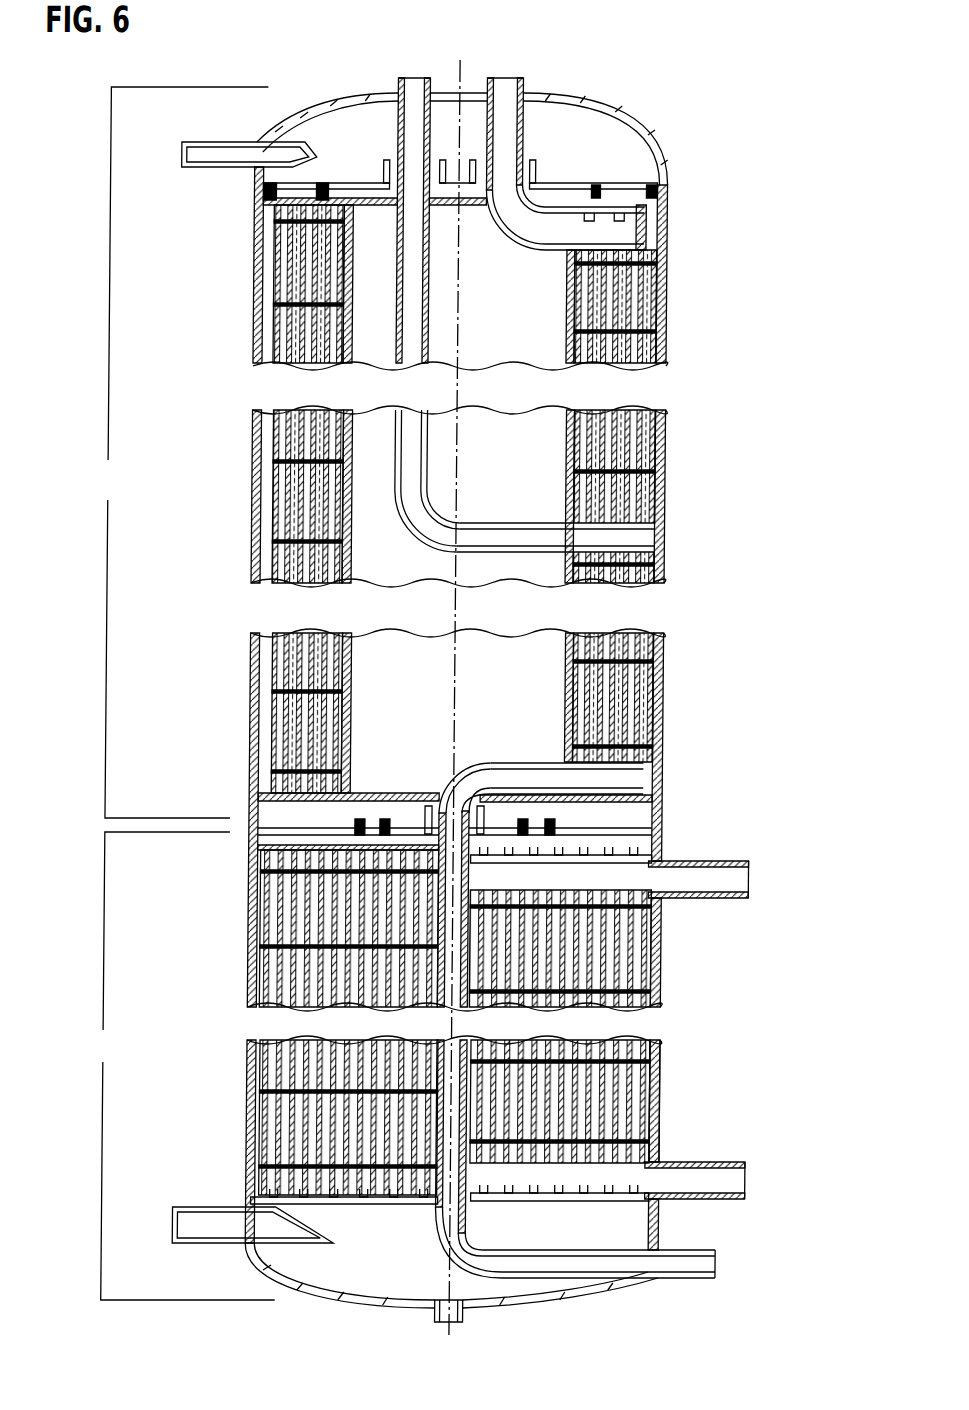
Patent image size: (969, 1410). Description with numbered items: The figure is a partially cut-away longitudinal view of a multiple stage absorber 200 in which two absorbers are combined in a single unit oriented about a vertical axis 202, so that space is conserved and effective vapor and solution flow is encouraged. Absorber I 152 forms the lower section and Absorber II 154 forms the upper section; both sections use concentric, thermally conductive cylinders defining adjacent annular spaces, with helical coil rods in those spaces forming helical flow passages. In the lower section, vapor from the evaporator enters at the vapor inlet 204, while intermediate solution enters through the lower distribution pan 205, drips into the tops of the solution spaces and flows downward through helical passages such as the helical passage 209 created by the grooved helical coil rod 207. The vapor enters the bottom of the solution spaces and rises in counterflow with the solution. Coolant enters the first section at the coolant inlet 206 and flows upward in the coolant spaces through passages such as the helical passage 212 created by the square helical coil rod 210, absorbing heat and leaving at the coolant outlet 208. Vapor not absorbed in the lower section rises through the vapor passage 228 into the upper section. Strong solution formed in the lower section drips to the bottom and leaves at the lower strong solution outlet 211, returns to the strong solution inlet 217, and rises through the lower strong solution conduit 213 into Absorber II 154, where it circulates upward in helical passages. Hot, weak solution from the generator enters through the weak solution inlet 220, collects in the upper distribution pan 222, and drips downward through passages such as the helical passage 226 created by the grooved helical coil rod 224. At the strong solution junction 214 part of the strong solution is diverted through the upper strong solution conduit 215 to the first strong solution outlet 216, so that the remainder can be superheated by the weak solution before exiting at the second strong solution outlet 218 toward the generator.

The multiple stage absorber 200 is at (76, 302).
The vertical axis 202 is at (458, 78).
The vapor inlet 204 is at (209, 1207).
The lower distribution pan 205 is at (633, 830).
The coolant inlet 206 is at (679, 1163).
The grooved helical coil rod 207 is at (265, 1093).
The upper right outlet pipe 208 is at (692, 898).
The helical passage 209 is at (273, 1133).
The square helical coil rod 210 is at (658, 1061).
The lower strong solution outlet 211 is at (469, 1320).
The helical passage 212 is at (656, 1088).
The lower strong solution conduit 213 is at (457, 998).
The strong solution junction 214 is at (610, 541).
The upper strong solution conduit 215 is at (411, 330).
The first strong solution outlet 216 is at (393, 78).
The strong solution inlet 217 is at (695, 1278).
The second strong solution outlet 218 is at (518, 82).
The weak solution inlet 220 is at (200, 142).
The upper distribution pan 222 is at (654, 187).
The grooved helical coil rod 224 is at (286, 303).
The helical passage 226 is at (252, 257).
The vapor passage 228 is at (440, 795).
The Absorber II 154 is at (178, 452).
The Absorber I 152 is at (181, 1066).